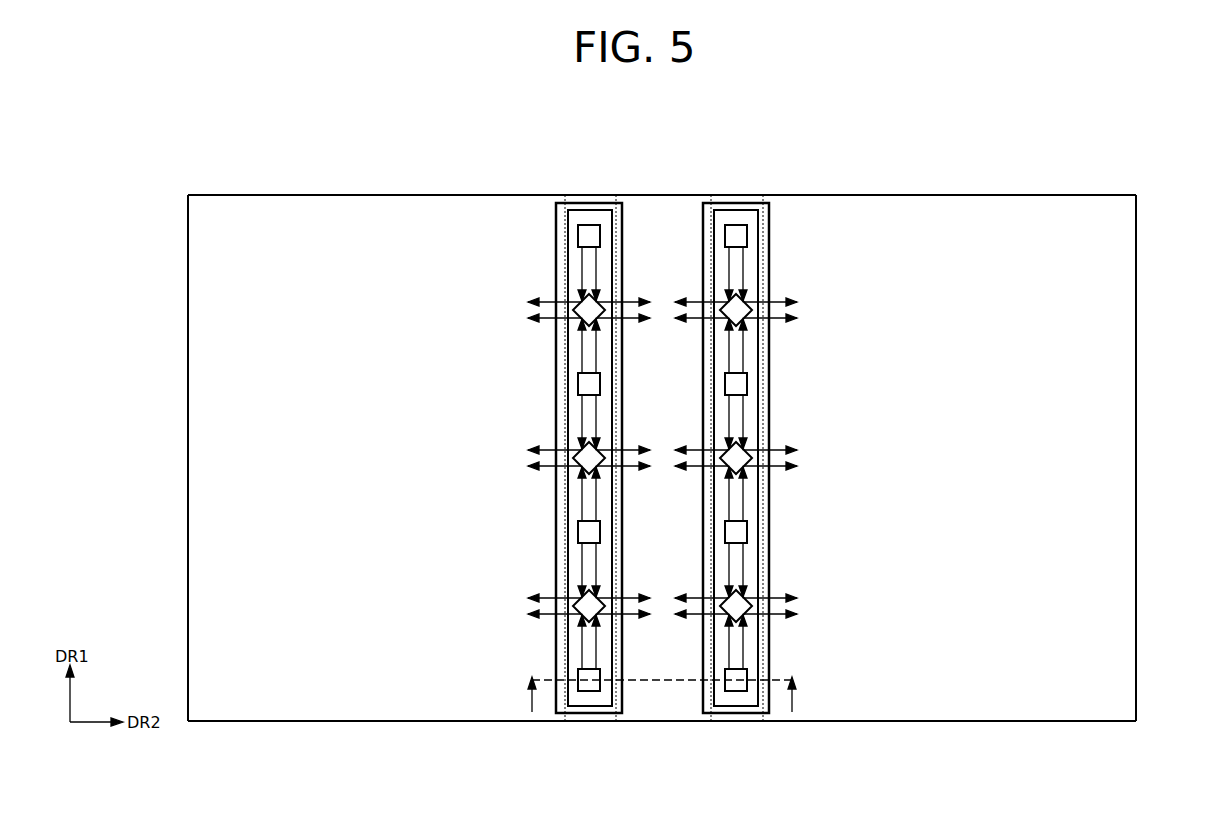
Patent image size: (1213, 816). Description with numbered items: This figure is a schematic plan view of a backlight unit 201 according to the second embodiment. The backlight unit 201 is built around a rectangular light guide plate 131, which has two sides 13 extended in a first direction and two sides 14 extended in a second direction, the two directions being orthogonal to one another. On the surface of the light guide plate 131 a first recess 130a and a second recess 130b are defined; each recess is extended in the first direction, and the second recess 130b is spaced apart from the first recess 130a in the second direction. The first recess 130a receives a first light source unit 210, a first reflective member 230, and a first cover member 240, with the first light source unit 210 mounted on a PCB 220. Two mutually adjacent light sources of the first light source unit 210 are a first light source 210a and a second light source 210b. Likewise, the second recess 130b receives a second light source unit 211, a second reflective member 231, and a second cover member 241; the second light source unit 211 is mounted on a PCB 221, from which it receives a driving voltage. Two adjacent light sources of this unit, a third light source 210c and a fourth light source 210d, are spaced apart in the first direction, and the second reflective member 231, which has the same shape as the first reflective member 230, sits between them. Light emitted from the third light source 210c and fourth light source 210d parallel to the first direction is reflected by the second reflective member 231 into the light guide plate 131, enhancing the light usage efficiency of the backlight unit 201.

The backlight unit 201 is at (1088, 140).
The sides 14 is at (907, 195).
The sides 13 is at (188, 341).
The light guide plate 131 is at (1120, 462).
The first recess 130a is at (567, 258).
The second recess 130b is at (760, 258).
The PCB 220 is at (557, 495).
The PCB 221 is at (769, 496).
The first cover member 240 is at (567, 384).
The second cover member 241 is at (758, 384).
The first reflective member 230 is at (574, 457).
The second reflective member 231 is at (751, 457).
The first light source unit 210 is at (463, 523).
The second light source unit 211 is at (861, 522).
The first light source 210a is at (578, 673).
The second light source 210b is at (578, 531).
The third light source 210c is at (747, 672).
The fourth light source 210d is at (747, 531).